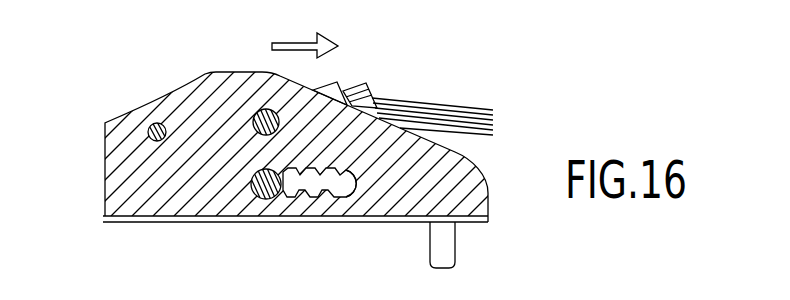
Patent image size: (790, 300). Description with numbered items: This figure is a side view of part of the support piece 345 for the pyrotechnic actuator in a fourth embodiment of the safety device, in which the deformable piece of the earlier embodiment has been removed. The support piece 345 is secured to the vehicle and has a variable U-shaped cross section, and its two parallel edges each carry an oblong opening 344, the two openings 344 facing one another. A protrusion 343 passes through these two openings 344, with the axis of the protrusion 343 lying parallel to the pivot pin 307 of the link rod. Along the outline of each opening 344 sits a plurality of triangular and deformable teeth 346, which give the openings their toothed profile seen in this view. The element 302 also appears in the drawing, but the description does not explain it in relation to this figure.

The strap 302 is at (333, 92).
The pivot pin 307 is at (272, 109).
The protrusion 343 is at (262, 198).
The oblong openings 344 is at (340, 183).
The support piece 345 is at (138, 187).
The triangular and deformable teeth 346 is at (312, 195).